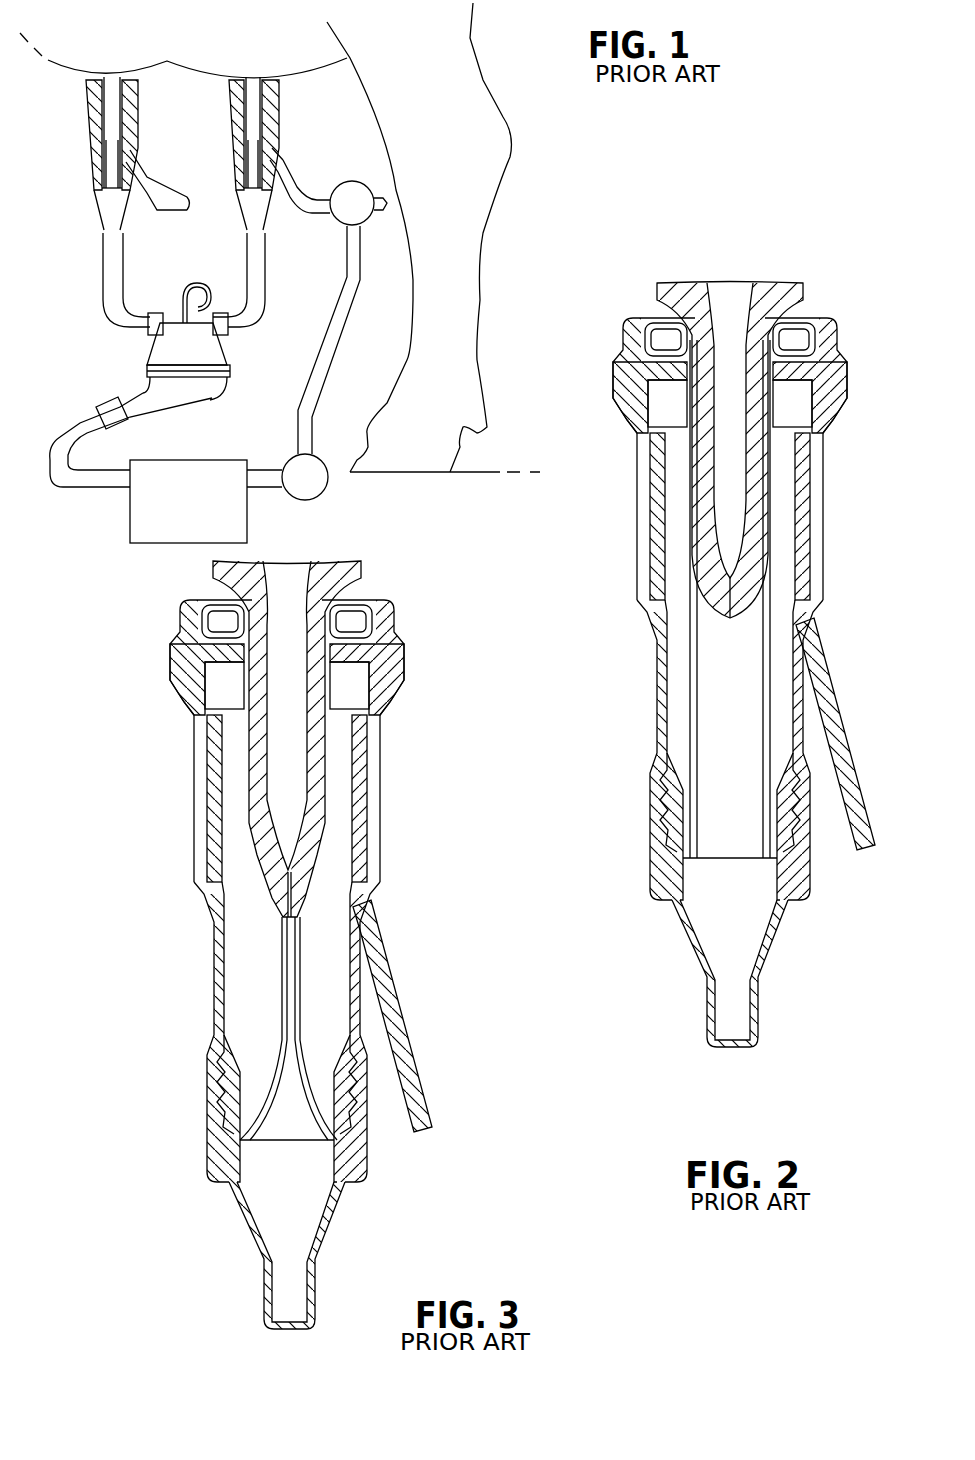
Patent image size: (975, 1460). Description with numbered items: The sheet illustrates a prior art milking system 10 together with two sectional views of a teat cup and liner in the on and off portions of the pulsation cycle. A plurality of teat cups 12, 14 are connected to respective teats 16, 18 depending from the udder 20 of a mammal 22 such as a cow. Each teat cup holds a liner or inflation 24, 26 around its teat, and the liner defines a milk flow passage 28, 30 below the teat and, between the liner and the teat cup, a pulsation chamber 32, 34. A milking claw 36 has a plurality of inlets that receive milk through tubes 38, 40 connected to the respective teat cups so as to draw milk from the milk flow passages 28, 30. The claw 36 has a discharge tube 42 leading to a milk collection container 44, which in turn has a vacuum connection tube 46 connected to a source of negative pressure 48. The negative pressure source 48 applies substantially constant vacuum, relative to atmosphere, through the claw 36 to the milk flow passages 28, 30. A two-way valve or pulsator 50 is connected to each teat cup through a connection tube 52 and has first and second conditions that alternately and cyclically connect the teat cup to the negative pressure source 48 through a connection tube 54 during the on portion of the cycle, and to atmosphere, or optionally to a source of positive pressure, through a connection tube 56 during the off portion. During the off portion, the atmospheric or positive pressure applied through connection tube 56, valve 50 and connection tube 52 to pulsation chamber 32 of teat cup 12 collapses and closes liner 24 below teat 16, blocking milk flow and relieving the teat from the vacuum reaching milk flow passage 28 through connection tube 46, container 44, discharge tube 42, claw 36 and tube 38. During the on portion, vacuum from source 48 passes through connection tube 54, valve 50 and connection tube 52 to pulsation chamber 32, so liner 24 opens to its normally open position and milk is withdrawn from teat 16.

In FIG. 1, the milking system 10 is at (100, 340).
In FIG. 1, the teat cup 12 is at (235, 115).
In FIG. 2, the teat cup 12 is at (660, 653).
In FIG. 3, the teat cup 12 is at (213, 950).
In FIG. 1, the teat cup 14 is at (90, 115).
In FIG. 1, the teat 16 is at (254, 80).
In FIG. 2, the teat 16 is at (733, 292).
In FIG. 3, the teat 16 is at (337, 572).
In FIG. 1, the teat 18 is at (112, 77).
In FIG. 1, the udder 20 is at (305, 65).
In FIG. 1, the mammal 22 is at (476, 42).
In FIG. 1, the liner 24 is at (242, 145).
In FIG. 2, the liner 24 is at (692, 678).
In FIG. 3, the liner 24 is at (282, 962).
In FIG. 1, the liner 26 is at (98, 140).
In FIG. 1, the milk flow passage 28 is at (248, 172).
In FIG. 2, the milk flow passage 28 is at (712, 718).
In FIG. 3, the milk flow passage 28 is at (289, 1062).
In FIG. 1, the milk flow passage 30 is at (108, 170).
In FIG. 1, the pulsation chamber 32 is at (270, 150).
In FIG. 2, the pulsation chamber 32 is at (786, 655).
In FIG. 3, the pulsation chamber 32 is at (340, 930).
In FIG. 1, the pulsation chamber 34 is at (125, 142).
In FIG. 1, the milking claw 36 is at (215, 395).
In FIG. 1, the tube 38 is at (250, 265).
In FIG. 1, the tube 40 is at (105, 270).
In FIG. 1, the discharge tube 42 is at (100, 420).
In FIG. 1, the milk collection container 44 is at (160, 465).
In FIG. 1, the vacuum connection tube 46 is at (258, 472).
In FIG. 1, the source of negative pressure 48 is at (318, 460).
In FIG. 1, the two-way valve or pulsator 50 is at (340, 220).
In FIG. 1, the connection tube 52 is at (313, 200).
In FIG. 1, the connection tube 54 is at (348, 275).
In FIG. 1, the connection tube 56 is at (378, 212).